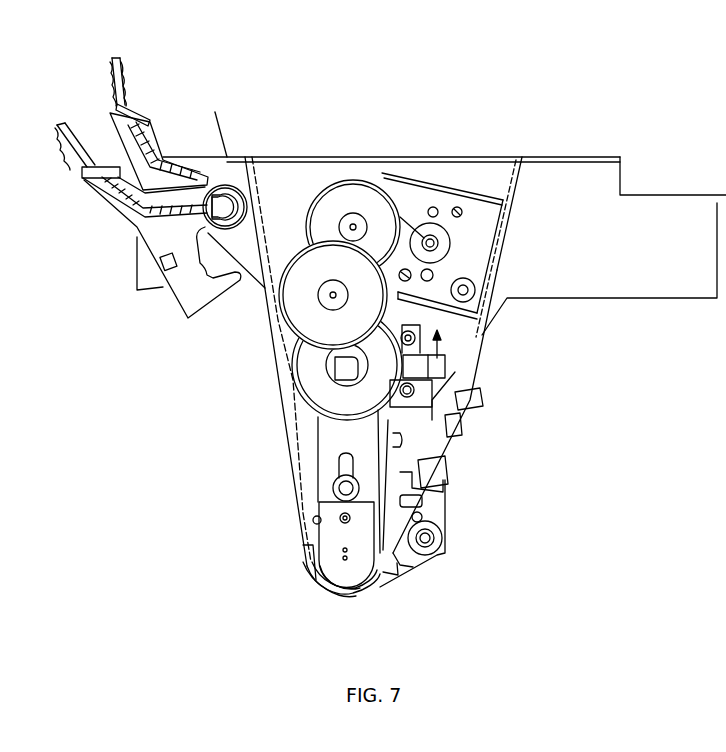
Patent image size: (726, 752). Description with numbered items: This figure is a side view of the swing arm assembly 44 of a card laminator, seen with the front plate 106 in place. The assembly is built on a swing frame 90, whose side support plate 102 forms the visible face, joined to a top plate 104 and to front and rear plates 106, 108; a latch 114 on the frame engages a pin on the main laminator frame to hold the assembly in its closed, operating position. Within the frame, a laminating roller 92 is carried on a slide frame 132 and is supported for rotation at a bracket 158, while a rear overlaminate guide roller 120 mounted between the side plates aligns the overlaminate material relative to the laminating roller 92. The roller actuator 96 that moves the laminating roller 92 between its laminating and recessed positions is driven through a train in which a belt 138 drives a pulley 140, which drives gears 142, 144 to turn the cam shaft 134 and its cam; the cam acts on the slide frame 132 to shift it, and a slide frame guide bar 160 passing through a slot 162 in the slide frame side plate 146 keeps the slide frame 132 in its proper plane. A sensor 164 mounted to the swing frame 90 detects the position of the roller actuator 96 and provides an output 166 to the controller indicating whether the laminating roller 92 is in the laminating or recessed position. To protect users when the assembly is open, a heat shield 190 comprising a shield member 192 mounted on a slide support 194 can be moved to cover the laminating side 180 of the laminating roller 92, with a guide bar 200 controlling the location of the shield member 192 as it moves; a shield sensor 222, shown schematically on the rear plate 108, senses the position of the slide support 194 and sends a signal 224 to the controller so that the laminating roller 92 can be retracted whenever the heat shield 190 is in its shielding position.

The swing arm assembly 44 is at (470, 118).
The swing frame 90 is at (513, 207).
The laminating roller 92 is at (313, 553).
The roller actuator 96 is at (323, 427).
The side support plate 102 is at (656, 212).
The top plate 104 is at (347, 160).
The front plate 106 is at (263, 297).
The rear plate 108 is at (505, 262).
The latch 114 is at (83, 177).
The rear overlaminate guide roller 120 is at (438, 538).
The slide frame 132 is at (323, 452).
The cam shaft 134 is at (337, 362).
The belt 138 is at (445, 180).
The pulley 140 is at (320, 187).
The gear 142 is at (300, 243).
The gear 144 is at (298, 337).
The side plate of slide frame 146 is at (380, 460).
The bracket 158 is at (327, 542).
The slide frame guide bar 160 is at (337, 490).
The slot 162 is at (423, 487).
The sensor 164 is at (445, 360).
The output 166 is at (440, 343).
The laminating side 180 is at (327, 590).
The heat shield 190 is at (447, 378).
The shield member 192 is at (355, 590).
The slide support 194 is at (480, 409).
The guide bar 200 is at (397, 563).
The shield sensor 222 is at (452, 435).
The signal 224 is at (508, 428).